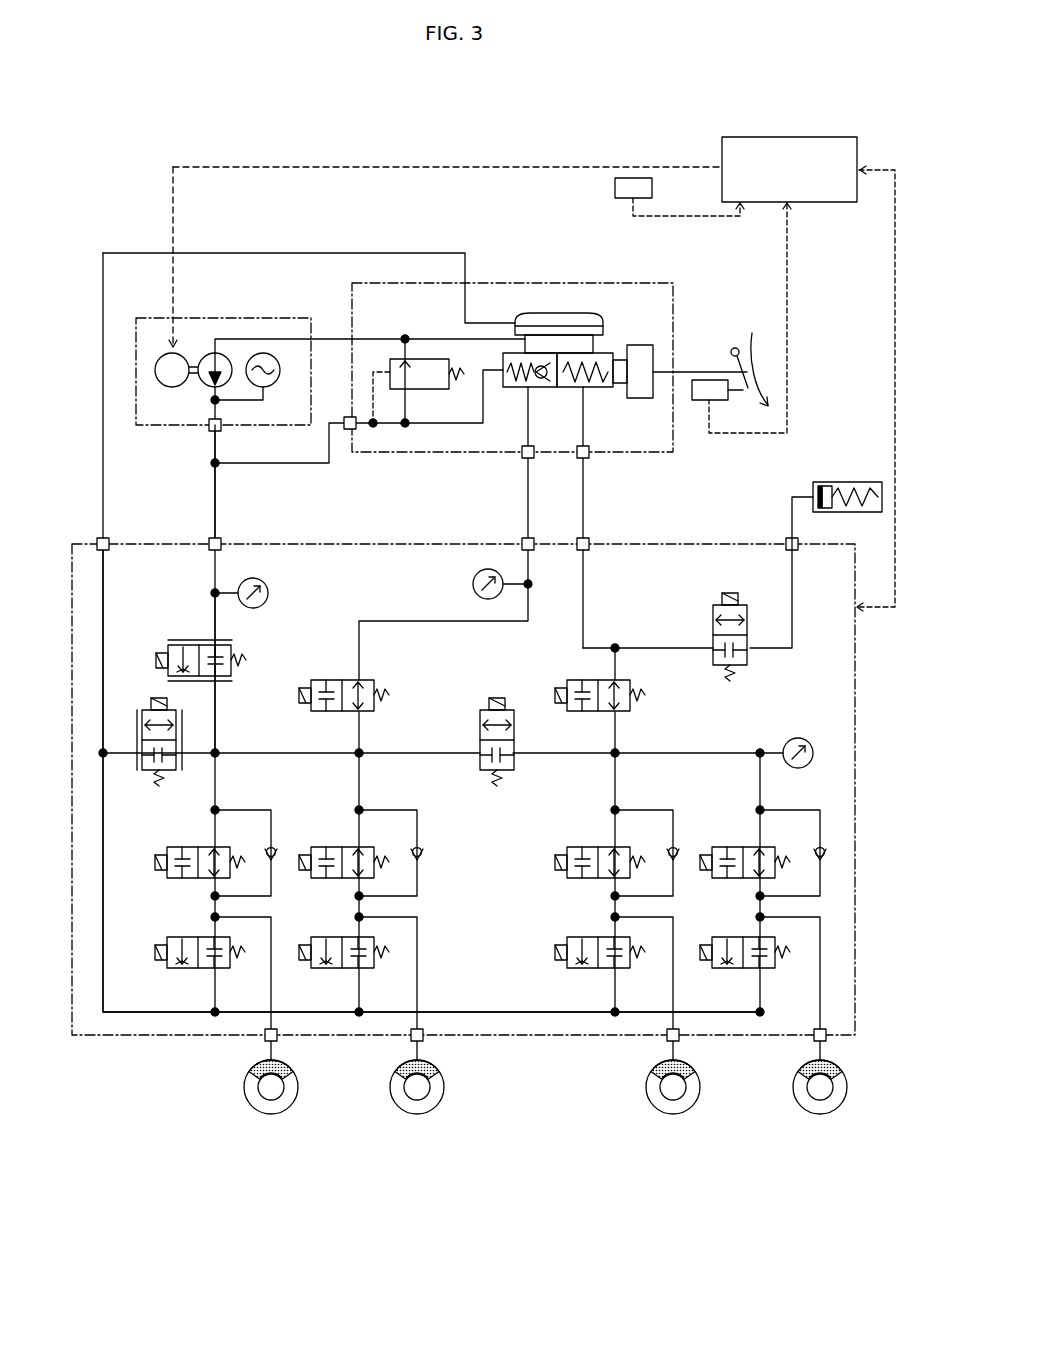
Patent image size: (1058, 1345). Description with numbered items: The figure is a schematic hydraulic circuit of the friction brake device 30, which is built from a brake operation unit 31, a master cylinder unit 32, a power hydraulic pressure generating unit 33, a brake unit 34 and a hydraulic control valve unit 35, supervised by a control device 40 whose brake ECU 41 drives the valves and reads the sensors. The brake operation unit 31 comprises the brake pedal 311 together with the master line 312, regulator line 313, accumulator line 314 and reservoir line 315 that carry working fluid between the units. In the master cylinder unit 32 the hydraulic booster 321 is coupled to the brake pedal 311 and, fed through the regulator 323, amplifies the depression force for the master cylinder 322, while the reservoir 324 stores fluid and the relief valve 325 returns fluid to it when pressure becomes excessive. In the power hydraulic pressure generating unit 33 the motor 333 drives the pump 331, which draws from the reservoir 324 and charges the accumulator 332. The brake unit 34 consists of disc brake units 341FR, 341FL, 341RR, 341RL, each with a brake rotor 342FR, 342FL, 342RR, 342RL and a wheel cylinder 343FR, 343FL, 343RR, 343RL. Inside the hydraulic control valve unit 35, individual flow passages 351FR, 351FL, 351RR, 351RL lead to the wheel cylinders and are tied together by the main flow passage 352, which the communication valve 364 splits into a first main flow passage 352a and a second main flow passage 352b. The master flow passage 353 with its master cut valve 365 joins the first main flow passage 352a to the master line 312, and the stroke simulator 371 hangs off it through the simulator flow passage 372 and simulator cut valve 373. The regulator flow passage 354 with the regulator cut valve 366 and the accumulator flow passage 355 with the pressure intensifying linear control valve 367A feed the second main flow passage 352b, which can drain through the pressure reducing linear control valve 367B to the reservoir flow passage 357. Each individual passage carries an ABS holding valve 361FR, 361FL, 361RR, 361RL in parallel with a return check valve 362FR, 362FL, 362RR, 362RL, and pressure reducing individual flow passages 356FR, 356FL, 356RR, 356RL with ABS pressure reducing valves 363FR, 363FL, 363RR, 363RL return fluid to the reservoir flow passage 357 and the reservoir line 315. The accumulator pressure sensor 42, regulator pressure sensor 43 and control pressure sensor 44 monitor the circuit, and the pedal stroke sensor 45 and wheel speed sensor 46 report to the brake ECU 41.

The friction brake device 30 is at (117, 138).
The brake operation unit 31 is at (806, 306).
The master cylinder unit 32 is at (610, 285).
The power hydraulic pressure generating unit 33 is at (262, 322).
The brake unit 34 is at (128, 1133).
The hydraulic control valve unit 35 is at (690, 542).
The control device 40 is at (672, 136).
The brake ECU 41 is at (793, 137).
The accumulator pressure sensor 42 is at (258, 578).
The regulator pressure sensor 43 is at (473, 582).
The control pressure sensor 44 is at (798, 737).
The pedal stroke sensor 45 is at (700, 402).
The wheel speed sensor 46 is at (652, 188).
The brake pedal 311 is at (750, 362).
The master line 312 is at (586, 503).
The regulator line 313 is at (526, 497).
The accumulator line 314 is at (218, 503).
The reservoir line 315 is at (106, 488).
The hydraulic booster 321 is at (640, 400).
The master cylinder 322 is at (572, 390).
The regulator 323 is at (510, 390).
The reservoir 324 is at (572, 316).
The relief valve 325 is at (420, 389).
The pump 331 is at (200, 390).
The accumulator 332 is at (280, 388).
The motor 333 is at (160, 390).
The disc brake unit 341RR is at (243, 1112).
The disc brake unit 341RL is at (389, 1112).
The disc brake unit 341FR is at (645, 1112).
The disc brake unit 341FL is at (792, 1112).
The brake rotor 342RR is at (271, 1114).
The brake rotor 342RL is at (417, 1114).
The brake rotor 342FR is at (673, 1114).
The brake rotor 342FL is at (820, 1114).
The wheel cylinder 343RR is at (250, 1065).
The wheel cylinder 343RL is at (396, 1065).
The wheel cylinder 343FR is at (652, 1065).
The wheel cylinder 343FL is at (798, 1065).
The individual flow passage 351RR is at (271, 1025).
The individual flow passage 351RL is at (417, 1025).
The individual flow passage 351FR is at (673, 1025).
The individual flow passage 351FL is at (820, 995).
The main flow passage 352 is at (427, 750).
The first main flow passage 352a is at (652, 755).
The second main flow passage 352b is at (272, 755).
The master flow passage 353 is at (585, 575).
The regulator flow passage 354 is at (473, 623).
The accumulator flow passage 355 is at (218, 718).
The pressure reducing individual flow passage 356RR is at (213, 918).
The pressure reducing individual flow passage 356RL is at (357, 918).
The pressure reducing individual flow passage 356FR is at (613, 918).
The pressure reducing individual flow passage 356FL is at (758, 918).
The reservoir flow passage 357 is at (152, 1013).
The ABS holding valve 361RR is at (168, 878).
The ABS holding valve 361RL is at (312, 878).
The ABS holding valve 361FR is at (568, 880).
The ABS holding valve 361FL is at (714, 878).
The return check valve 362RR is at (271, 845).
The return check valve 362RL is at (417, 845).
The return check valve 362FR is at (673, 845).
The return check valve 362FL is at (820, 845).
The ABS pressure reducing valve 363RR is at (158, 968).
The ABS pressure reducing valve 363RL is at (302, 968).
The ABS pressure reducing valve 363FR is at (556, 960).
The ABS pressure reducing valve 363FL is at (706, 968).
The communication valve 364 is at (513, 730).
The master cut valve 365 is at (625, 712).
The regulator cut valve 366 is at (373, 680).
The pressure intensifying linear control valve 367A is at (185, 640).
The pressure reducing linear control valve 367B is at (143, 760).
The stroke simulator 371 is at (848, 480).
The simulator flow passage 372 is at (647, 646).
The simulator cut valve 373 is at (713, 640).